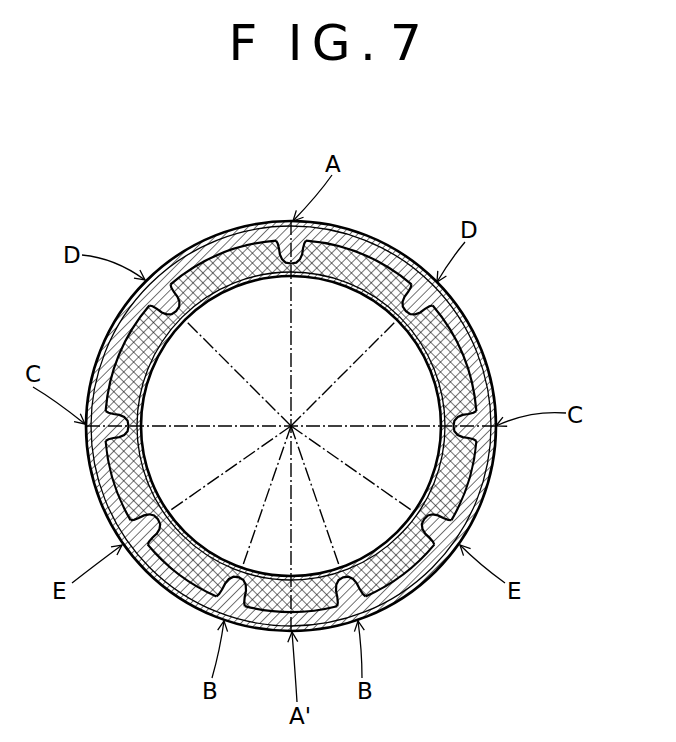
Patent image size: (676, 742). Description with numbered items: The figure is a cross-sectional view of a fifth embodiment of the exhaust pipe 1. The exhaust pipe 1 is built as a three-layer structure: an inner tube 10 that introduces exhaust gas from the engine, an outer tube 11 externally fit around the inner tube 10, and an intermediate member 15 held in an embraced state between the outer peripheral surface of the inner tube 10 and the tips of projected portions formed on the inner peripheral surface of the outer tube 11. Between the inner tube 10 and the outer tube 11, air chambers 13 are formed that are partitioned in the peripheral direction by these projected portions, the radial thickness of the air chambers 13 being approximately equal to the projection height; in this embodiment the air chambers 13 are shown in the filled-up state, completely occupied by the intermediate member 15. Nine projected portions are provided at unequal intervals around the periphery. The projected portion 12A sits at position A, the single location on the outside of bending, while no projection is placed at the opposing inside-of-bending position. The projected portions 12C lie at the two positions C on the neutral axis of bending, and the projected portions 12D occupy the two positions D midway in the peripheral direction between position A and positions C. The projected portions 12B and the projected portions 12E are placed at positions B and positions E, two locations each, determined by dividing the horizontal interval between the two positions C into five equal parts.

The exhaust pipe 1 is at (543, 217).
The inner tube 10 is at (467, 388).
The outer tube 11 is at (482, 357).
The projected portion 12A is at (335, 245).
The projected portions 12B is at (215, 600).
The projected portions 12C is at (97, 365).
The projected portions 12D is at (157, 290).
The projected portions 12E is at (118, 500).
The air chambers 13 is at (457, 490).
The intermediate member 15 is at (236, 250).